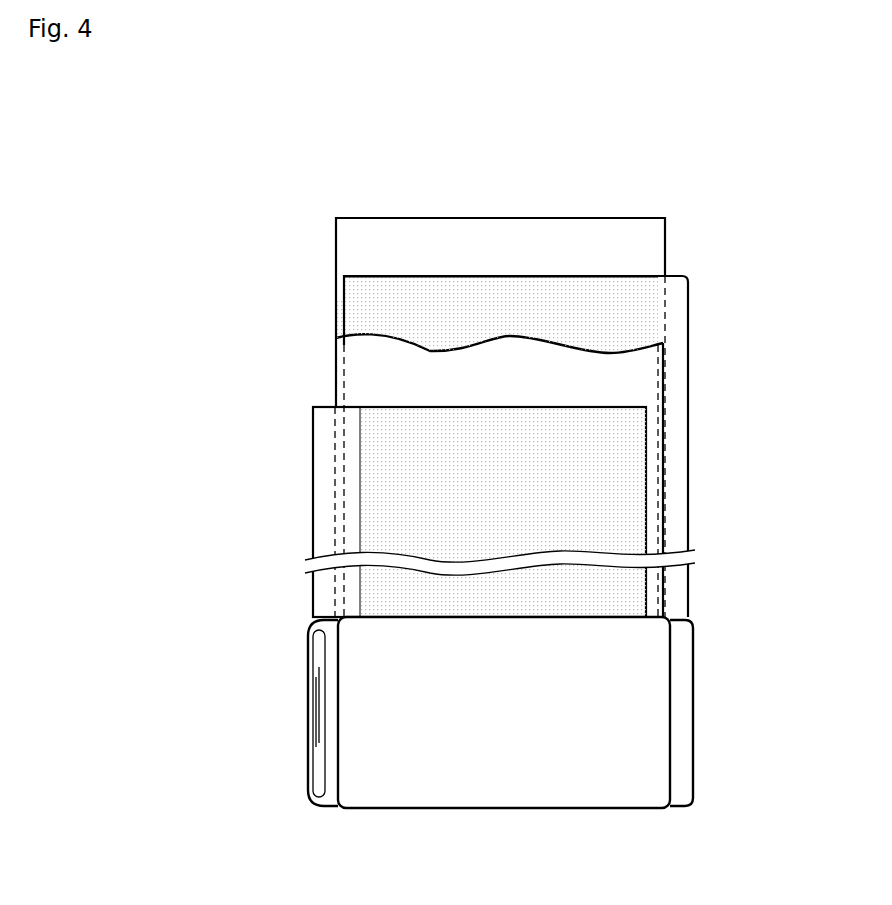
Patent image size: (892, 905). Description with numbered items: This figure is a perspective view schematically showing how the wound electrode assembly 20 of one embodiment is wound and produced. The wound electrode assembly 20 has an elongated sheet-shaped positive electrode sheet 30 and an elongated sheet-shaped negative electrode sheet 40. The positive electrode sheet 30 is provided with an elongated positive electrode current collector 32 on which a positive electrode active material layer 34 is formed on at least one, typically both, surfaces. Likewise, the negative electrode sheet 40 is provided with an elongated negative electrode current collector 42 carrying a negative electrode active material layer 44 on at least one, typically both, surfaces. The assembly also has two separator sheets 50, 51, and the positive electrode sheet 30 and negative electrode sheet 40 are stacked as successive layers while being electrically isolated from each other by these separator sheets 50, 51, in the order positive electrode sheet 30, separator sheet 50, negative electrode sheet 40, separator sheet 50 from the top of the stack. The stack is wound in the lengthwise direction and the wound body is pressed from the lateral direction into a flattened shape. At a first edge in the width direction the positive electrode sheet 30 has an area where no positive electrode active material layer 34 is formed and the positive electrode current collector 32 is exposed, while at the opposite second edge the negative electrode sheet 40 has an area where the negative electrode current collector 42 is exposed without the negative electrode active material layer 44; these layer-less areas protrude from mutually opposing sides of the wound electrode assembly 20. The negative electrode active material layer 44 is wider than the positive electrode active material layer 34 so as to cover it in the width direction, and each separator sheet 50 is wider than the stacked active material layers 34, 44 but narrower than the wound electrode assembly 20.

The wound electrode assembly 20 is at (411, 786).
The positive electrode sheet 30 is at (409, 512).
The positive electrode current collector 32 is at (311, 428).
The positive electrode active material layer 34 is at (370, 527).
The negative electrode sheet 40 is at (582, 446).
The negative electrode current collector 42 is at (690, 341).
The negative electrode active material layer 44 is at (653, 300).
The separator sheet 50 is at (353, 239).
The separator sheet 51 is at (455, 417).